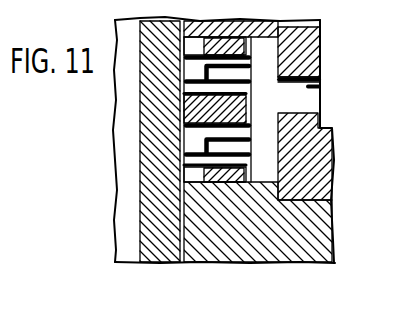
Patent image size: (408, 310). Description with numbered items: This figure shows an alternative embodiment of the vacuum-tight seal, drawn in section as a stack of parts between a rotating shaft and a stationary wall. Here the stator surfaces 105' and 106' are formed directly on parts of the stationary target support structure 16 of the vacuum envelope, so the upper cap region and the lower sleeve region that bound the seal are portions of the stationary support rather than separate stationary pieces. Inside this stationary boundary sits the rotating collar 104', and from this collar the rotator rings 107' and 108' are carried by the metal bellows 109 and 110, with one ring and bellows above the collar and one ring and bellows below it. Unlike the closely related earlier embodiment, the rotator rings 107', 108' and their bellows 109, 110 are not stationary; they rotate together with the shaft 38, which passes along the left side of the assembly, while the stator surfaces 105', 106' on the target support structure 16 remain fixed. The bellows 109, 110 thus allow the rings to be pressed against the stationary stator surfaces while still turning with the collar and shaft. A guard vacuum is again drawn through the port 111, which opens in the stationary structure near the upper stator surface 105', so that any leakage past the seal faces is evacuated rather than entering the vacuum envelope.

The shaft 38 is at (157, 245).
The stationary target support structure 16 is at (338, 223).
The stator surface 105' is at (275, 49).
The metal bellows 109 is at (252, 65).
The port 111 is at (322, 88).
The rotator ring 107' is at (177, 65).
The rotating collar 104' is at (277, 106).
The metal bellows 110 is at (252, 134).
The rotator ring 108' is at (175, 169).
The stator surface 106' is at (316, 156).